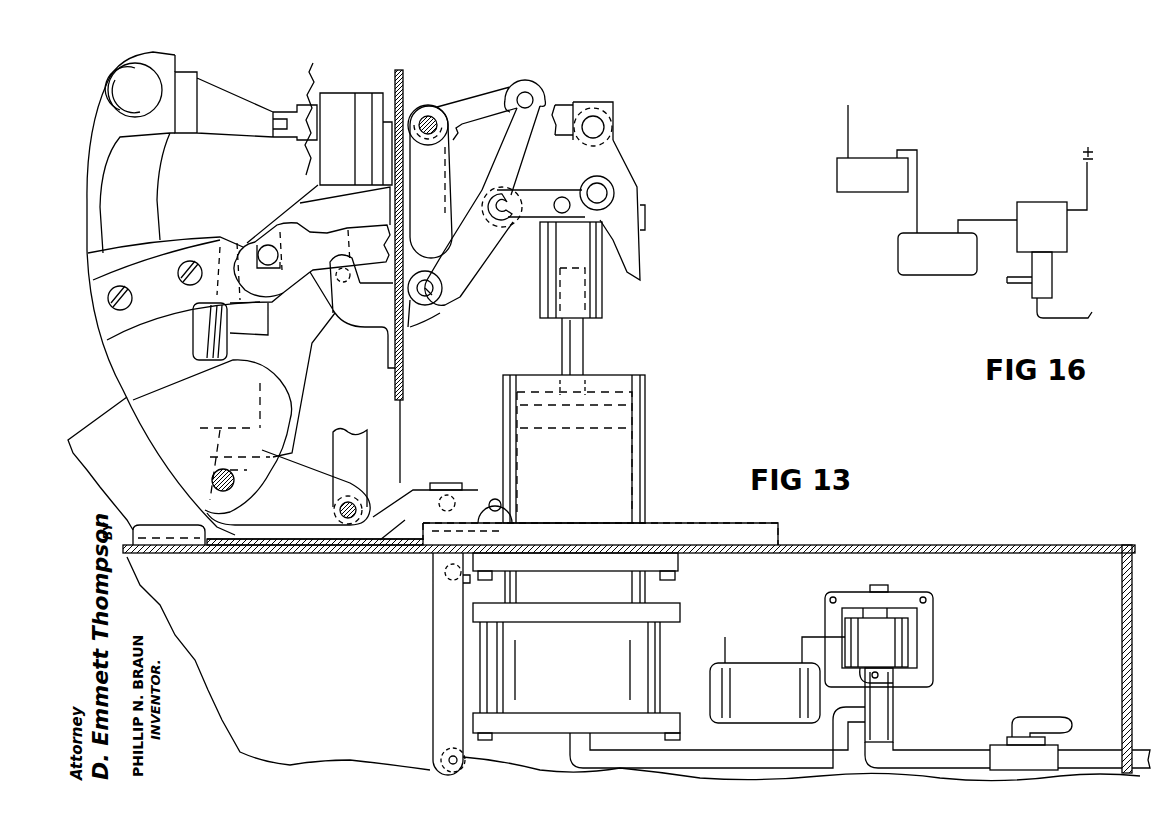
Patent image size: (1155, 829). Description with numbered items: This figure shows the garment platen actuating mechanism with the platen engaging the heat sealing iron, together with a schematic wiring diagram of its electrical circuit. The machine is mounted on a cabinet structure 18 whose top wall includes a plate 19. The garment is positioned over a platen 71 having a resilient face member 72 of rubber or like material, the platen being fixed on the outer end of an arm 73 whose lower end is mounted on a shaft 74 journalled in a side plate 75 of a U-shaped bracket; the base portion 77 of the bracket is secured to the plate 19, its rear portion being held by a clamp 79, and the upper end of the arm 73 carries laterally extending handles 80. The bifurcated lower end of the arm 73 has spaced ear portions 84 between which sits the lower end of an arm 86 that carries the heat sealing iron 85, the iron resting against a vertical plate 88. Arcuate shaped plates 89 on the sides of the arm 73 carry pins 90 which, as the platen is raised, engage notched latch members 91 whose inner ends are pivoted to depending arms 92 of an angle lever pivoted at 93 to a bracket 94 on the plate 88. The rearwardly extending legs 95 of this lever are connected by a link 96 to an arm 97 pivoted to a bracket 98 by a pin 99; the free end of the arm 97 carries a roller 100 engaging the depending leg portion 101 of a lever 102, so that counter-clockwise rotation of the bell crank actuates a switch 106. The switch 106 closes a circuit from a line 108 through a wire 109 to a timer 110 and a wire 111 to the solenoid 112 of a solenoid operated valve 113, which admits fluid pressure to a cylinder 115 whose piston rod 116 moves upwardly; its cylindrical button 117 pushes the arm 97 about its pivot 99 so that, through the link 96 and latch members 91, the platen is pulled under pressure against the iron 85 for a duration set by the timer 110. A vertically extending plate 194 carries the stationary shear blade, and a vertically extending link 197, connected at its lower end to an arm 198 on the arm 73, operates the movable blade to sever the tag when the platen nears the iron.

In FIG. 13, the cabinet structure 18 is at (1000, 602).
In FIG. 13, the top wall plate 19 is at (867, 546).
In FIG. 13, the platen 71 is at (224, 104).
In FIG. 13, the resilient face member 72 is at (308, 107).
In FIG. 13, the arm 73 is at (150, 222).
In FIG. 13, the shaft 74 is at (218, 470).
In FIG. 13, the side plate 75 is at (166, 532).
In FIG. 13, the base portion 77 is at (284, 540).
In FIG. 13, the clamp 79 is at (425, 490).
In FIG. 13, the handle 80 is at (133, 90).
In FIG. 13, the ear portion 84 is at (212, 437).
In FIG. 13, the heat sealing iron 85 is at (340, 106).
In FIG. 13, the arm 86 is at (294, 356).
In FIG. 13, the plate 88 is at (401, 95).
In FIG. 13, the arcuate shaped plate 89 is at (155, 285).
In FIG. 13, the pin 90 is at (268, 245).
In FIG. 13, the latch member 91 is at (303, 261).
In FIG. 13, the depending arm 92 is at (452, 205).
In FIG. 13, the pivot 93 is at (433, 118).
In FIG. 13, the bracket 94 is at (422, 108).
In FIG. 13, the rearwardly extending leg 95 is at (494, 95).
In FIG. 13, the link 96 is at (530, 164).
In FIG. 13, the arm 97 is at (478, 255).
In FIG. 13, the bracket 98 is at (422, 310).
In FIG. 13, the pin 99 is at (443, 289).
In FIG. 13, the roller 100 is at (597, 185).
In FIG. 13, the depending leg portion 101 is at (637, 226).
In FIG. 13, the lever 102 is at (566, 106).
In FIG. 16, the switch 106 is at (872, 175).
In FIG. 16, the line 108 is at (852, 128).
In FIG. 13, the wire 109 is at (727, 648).
In FIG. 16, the wire 109 is at (918, 206).
In FIG. 13, the timer 110 is at (765, 693).
In FIG. 16, the timer 110 is at (937, 254).
In FIG. 13, the wire 111 is at (808, 636).
In FIG. 16, the wire 111 is at (1005, 220).
In FIG. 13, the solenoid 112 is at (879, 636).
In FIG. 16, the solenoid 112 is at (1055, 199).
In FIG. 13, the solenoid operated valve 113 is at (896, 718).
In FIG. 16, the solenoid operated valve 113 is at (1054, 287).
In FIG. 13, the cylinder 115 is at (574, 449).
In FIG. 13, the piston rod 116 is at (586, 358).
In FIG. 13, the cylindrical button 117 is at (604, 296).
In FIG. 13, the vertically extending plate 194 is at (104, 463).
In FIG. 13, the link 197 is at (346, 460).
In FIG. 13, the arm 198 is at (288, 487).